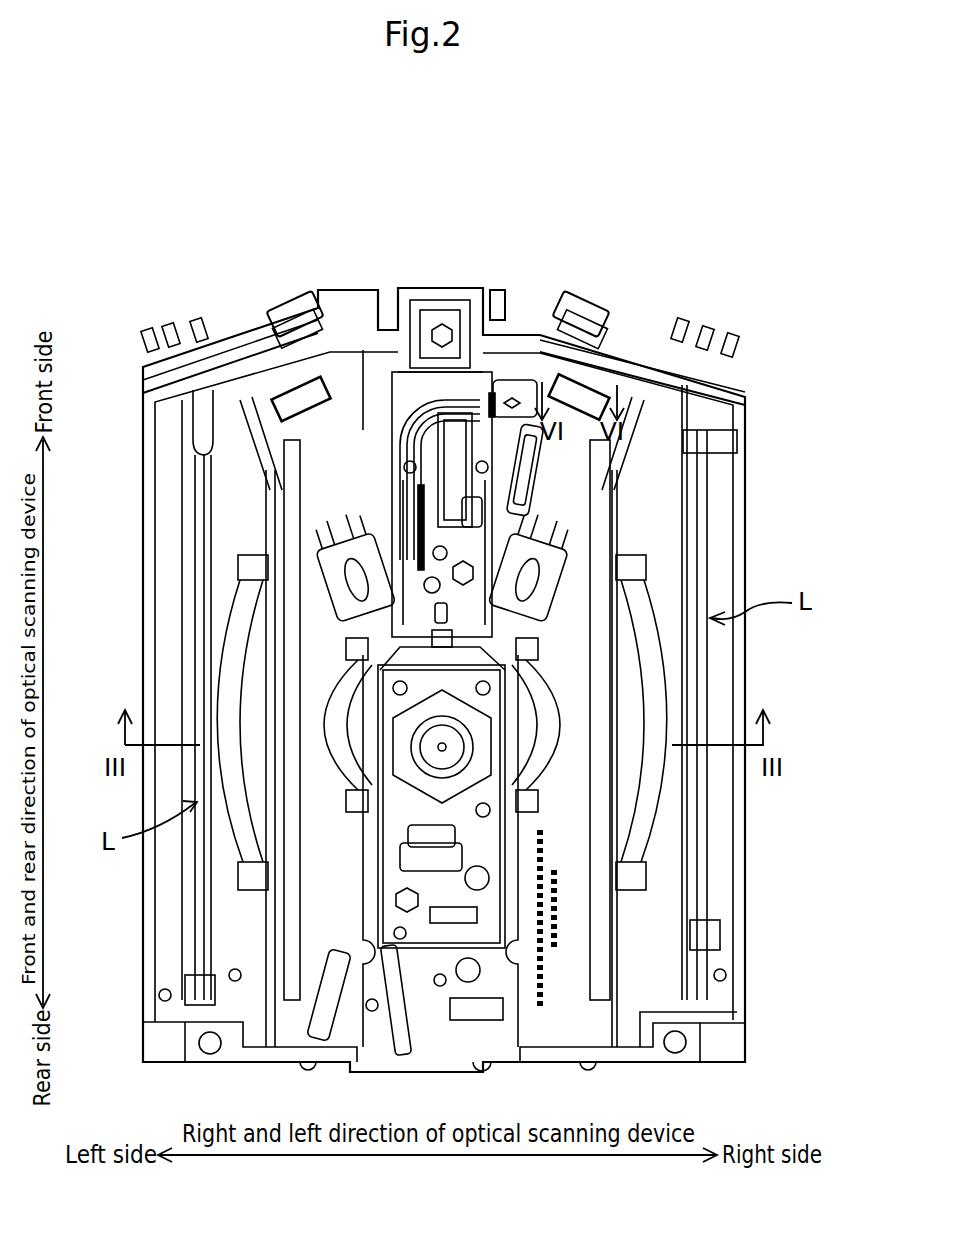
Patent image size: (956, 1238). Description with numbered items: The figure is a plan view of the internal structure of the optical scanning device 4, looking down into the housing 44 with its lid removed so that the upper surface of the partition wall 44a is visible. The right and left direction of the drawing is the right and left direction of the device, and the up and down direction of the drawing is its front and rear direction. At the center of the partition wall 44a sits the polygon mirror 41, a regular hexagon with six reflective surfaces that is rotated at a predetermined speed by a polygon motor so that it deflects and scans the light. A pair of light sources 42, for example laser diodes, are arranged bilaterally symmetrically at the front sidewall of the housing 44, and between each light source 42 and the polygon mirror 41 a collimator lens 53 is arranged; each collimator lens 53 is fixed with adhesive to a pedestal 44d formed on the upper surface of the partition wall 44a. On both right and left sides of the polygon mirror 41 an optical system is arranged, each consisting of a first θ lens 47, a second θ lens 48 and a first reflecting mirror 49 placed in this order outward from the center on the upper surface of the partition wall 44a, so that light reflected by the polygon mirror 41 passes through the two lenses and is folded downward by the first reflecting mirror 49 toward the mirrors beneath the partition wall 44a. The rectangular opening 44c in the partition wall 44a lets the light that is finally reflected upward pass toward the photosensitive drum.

The optical scanning device 4 is at (253, 232).
The polygon mirror 41 is at (418, 773).
The light source 42 is at (278, 327).
The housing 44 is at (745, 418).
The partition wall 44a is at (363, 420).
The rectangular opening 44c is at (290, 470).
The pedestal 44d is at (303, 385).
The first θ lens 47 is at (330, 712).
The second θ lens 48 is at (230, 645).
The first reflecting mirror 49 is at (190, 582).
The collimator lens 53 is at (280, 387).